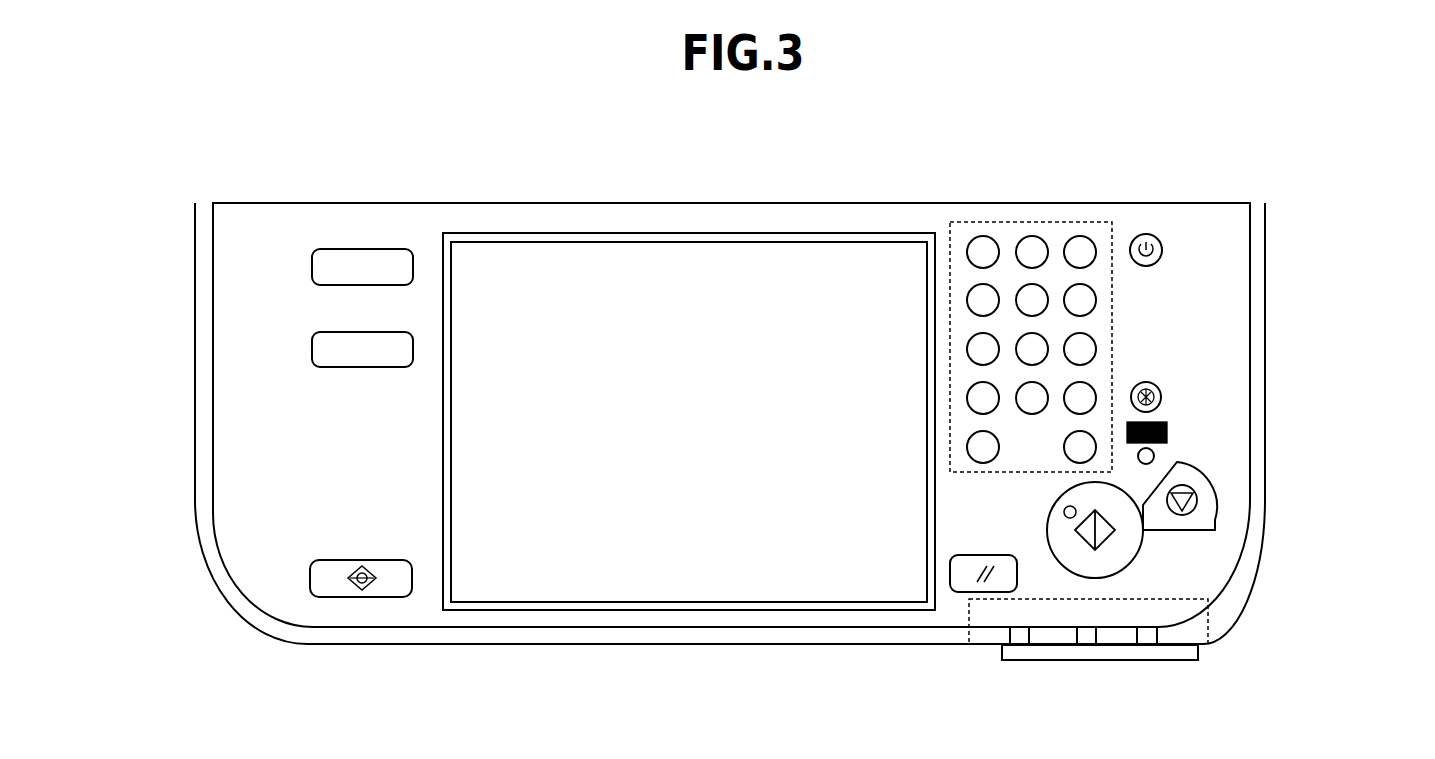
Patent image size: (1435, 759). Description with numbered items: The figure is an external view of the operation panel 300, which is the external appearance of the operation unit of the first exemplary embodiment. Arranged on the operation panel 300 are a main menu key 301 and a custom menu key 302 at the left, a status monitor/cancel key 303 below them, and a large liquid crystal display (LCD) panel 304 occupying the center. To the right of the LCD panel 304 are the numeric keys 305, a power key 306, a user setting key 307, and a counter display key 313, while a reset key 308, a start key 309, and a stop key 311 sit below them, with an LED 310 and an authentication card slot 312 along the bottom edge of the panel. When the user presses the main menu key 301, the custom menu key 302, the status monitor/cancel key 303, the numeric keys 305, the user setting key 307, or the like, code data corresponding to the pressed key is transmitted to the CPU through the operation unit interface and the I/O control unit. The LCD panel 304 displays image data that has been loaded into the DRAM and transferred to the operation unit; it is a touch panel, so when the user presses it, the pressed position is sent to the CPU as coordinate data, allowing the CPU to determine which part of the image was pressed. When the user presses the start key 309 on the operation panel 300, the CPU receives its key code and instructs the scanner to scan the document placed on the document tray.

The operation panel 300 is at (195, 215).
The main menu key 301 is at (312, 262).
The custom menu key 302 is at (312, 350).
The status monitor/cancel key 303 is at (380, 597).
The liquid crystal display (LCD) panel 304 is at (738, 262).
The numeric keys 305 is at (995, 222).
The power key 306 is at (1163, 250).
The user setting key 307 is at (1162, 397).
The reset key 308 is at (962, 592).
The start key 309 is at (1048, 522).
The LED 310 is at (1208, 643).
The stop key 311 is at (1215, 512).
The authentication card slot 312 is at (1120, 660).
The counter display key 313 is at (1168, 431).